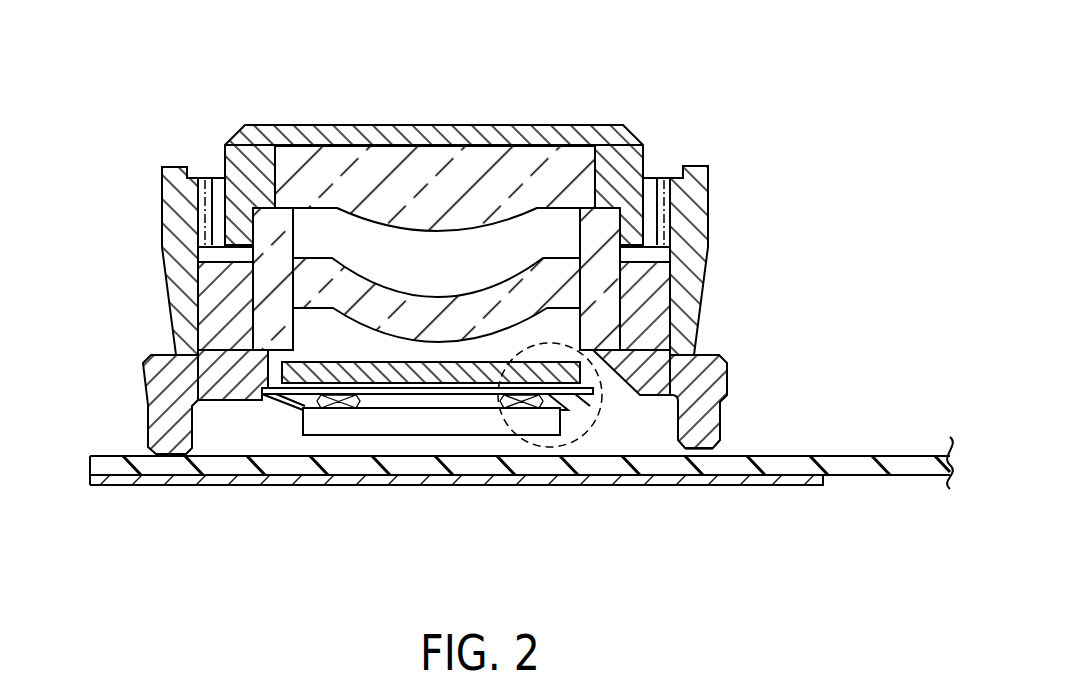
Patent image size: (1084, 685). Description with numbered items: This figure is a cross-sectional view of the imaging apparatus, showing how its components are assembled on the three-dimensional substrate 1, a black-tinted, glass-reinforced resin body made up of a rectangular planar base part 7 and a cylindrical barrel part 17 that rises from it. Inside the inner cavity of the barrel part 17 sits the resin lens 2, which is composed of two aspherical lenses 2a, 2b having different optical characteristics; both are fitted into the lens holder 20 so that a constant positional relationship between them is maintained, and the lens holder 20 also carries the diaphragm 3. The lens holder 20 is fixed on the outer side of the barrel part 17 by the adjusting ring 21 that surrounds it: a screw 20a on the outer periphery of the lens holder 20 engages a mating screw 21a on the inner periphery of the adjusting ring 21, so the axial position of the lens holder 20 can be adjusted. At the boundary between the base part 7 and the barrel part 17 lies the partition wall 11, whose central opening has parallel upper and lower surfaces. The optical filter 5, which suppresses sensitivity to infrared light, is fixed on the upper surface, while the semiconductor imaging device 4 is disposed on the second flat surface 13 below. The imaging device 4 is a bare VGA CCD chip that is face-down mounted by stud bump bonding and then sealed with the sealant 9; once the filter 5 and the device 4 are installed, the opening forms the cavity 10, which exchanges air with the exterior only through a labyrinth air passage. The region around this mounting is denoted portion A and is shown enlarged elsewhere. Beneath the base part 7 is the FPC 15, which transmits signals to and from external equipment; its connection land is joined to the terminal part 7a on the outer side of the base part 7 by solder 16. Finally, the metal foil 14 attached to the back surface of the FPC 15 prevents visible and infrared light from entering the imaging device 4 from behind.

The three-dimensional substrate 1 is at (810, 227).
The lens 2 is at (102, 23).
The aspherical lens 2a is at (282, 174).
The aspherical lens 2b is at (272, 240).
The diaphragm 3 is at (460, 125).
The lens holder 20 is at (563, 124).
The screw 20a is at (650, 173).
The adjusting ring 21 is at (705, 160).
The screw 21a is at (670, 174).
The barrel part 17 is at (657, 288).
The base part 7 is at (727, 387).
The terminal part 7a is at (728, 420).
The solder 16 is at (720, 455).
The optical filter 5 is at (330, 357).
The cavity 10 is at (453, 392).
The partition wall 11 is at (523, 408).
The semiconductor imaging device 4 is at (367, 425).
The sealant 9 is at (297, 412).
The second flat surface 13 is at (598, 394).
The portion A is at (592, 447).
The metal foil 14 is at (780, 486).
The FPC 15 is at (195, 472).